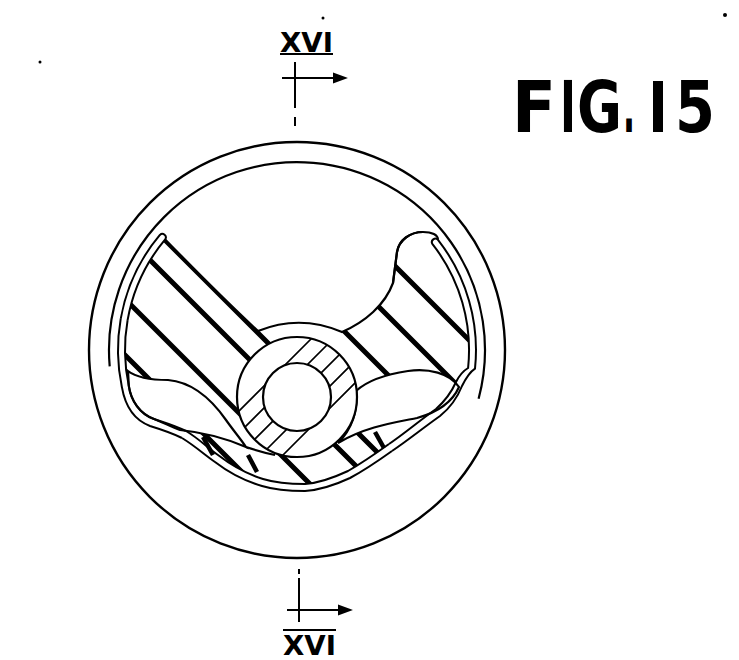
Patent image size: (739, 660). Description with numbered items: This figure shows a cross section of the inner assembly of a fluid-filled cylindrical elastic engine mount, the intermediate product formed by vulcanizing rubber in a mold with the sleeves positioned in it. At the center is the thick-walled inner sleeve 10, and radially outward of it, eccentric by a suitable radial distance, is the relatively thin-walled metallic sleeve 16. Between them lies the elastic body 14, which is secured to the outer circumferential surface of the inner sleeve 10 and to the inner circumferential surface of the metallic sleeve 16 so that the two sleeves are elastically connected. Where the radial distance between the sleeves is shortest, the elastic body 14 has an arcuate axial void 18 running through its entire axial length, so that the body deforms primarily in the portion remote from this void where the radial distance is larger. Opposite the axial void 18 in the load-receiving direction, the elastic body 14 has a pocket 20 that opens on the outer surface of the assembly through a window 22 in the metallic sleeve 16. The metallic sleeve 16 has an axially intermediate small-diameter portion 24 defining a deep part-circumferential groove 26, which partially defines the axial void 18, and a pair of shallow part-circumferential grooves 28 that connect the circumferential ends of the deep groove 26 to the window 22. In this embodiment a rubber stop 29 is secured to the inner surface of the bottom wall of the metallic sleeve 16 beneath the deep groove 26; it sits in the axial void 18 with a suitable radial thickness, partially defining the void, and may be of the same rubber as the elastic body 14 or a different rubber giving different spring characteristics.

The inner sleeve 10 is at (273, 356).
The elastic body 14 is at (150, 298).
The metallic sleeve 16 is at (133, 424).
The axial void 18 is at (167, 410).
The pocket 20 is at (396, 290).
The window 22 is at (160, 232).
The small-diameter portion 24 is at (470, 307).
The deep part-circumferential groove 26 is at (343, 484).
The shallow part-circumferential groove 28 is at (123, 310).
The rubber stop 29 is at (280, 468).